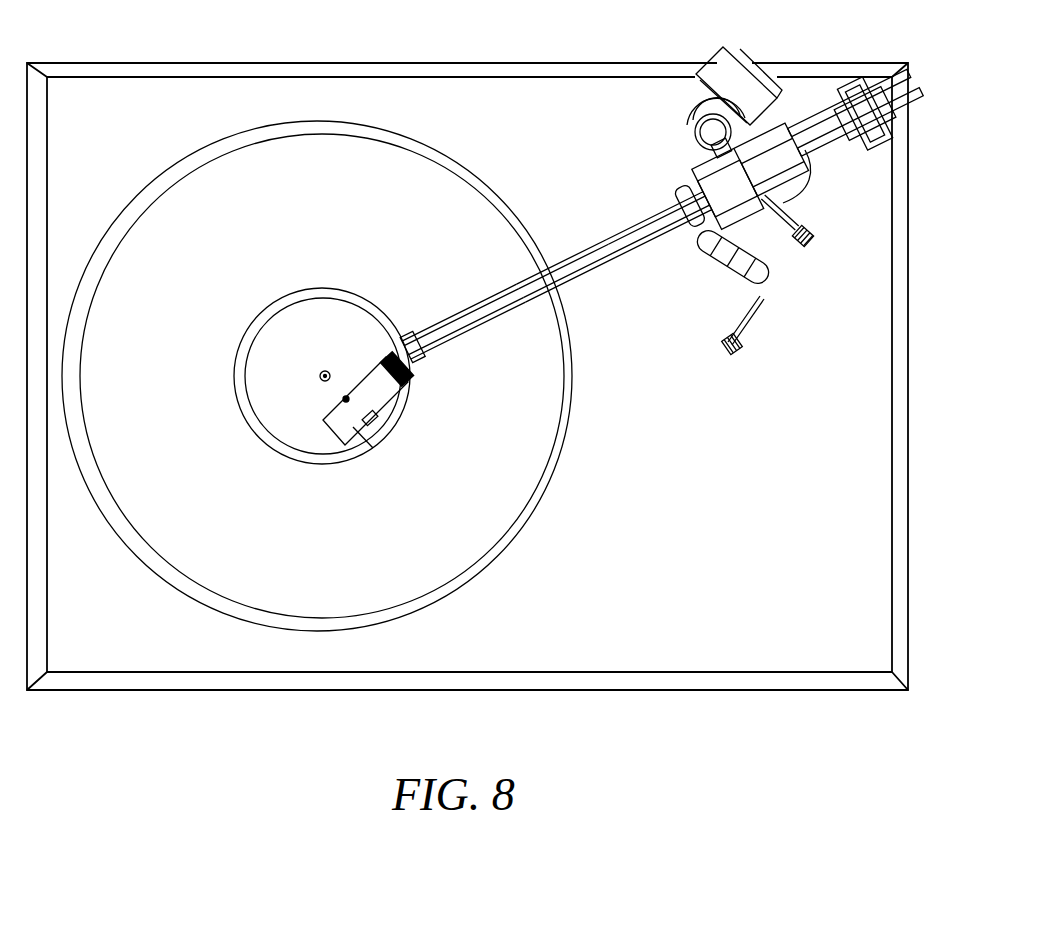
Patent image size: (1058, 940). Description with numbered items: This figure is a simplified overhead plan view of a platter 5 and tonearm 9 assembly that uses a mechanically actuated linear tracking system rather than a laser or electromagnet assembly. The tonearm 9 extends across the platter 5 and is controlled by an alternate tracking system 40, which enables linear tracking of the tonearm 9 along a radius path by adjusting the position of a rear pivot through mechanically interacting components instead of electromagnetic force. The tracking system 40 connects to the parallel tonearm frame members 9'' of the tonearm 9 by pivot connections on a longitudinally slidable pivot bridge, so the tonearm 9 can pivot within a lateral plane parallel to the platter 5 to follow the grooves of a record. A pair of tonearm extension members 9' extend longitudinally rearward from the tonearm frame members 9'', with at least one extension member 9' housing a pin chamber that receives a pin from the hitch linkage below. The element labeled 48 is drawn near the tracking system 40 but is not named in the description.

The platter 5 is at (550, 480).
The tonearm 9 is at (518, 327).
The tonearm frame members 9'' is at (574, 239).
The tonearm extension members 9' is at (858, 167).
The tracking system 40 is at (790, 292).
The adjustment knob 48 is at (697, 112).